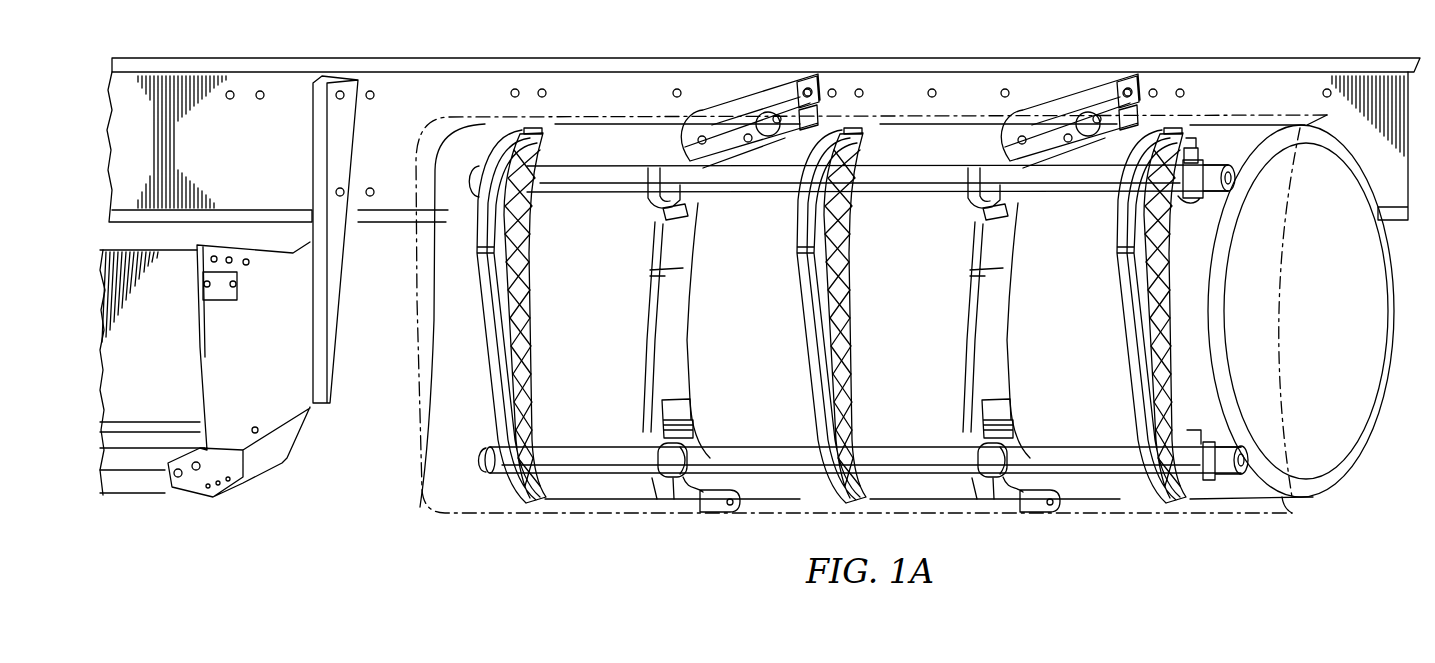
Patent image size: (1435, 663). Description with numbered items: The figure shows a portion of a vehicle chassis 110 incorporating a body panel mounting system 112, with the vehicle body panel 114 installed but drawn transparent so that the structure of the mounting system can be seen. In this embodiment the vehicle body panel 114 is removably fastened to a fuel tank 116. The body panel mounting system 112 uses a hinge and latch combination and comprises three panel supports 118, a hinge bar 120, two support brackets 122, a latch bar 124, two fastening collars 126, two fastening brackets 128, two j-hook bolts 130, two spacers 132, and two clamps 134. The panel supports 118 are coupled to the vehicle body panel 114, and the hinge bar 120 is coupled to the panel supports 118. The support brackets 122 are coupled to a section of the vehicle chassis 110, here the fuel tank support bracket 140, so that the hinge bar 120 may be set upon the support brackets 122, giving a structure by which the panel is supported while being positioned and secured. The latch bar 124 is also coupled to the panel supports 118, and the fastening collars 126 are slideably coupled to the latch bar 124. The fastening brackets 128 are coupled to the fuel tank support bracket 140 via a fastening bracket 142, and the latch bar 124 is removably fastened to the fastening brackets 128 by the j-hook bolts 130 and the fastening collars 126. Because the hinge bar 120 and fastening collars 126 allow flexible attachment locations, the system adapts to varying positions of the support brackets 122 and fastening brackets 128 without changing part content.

The vehicle chassis 110 is at (437, 58).
The body panel mounting system 112 is at (1153, 571).
The vehicle body panel 114 is at (423, 497).
The fuel tank 116 is at (617, 504).
The panel support 118 is at (528, 313).
The hinge bar 120 is at (737, 180).
The support bracket 122 is at (658, 200).
The latch bar 124 is at (755, 453).
The fastening collar 126 is at (660, 460).
The fastening bracket 128 is at (678, 407).
The j-hook bolt 130 is at (715, 513).
The spacer 132 is at (1183, 197).
The clamp 134 is at (1183, 147).
The fuel tank support bracket 140 is at (733, 78).
The fastening bracket 142 is at (646, 350).